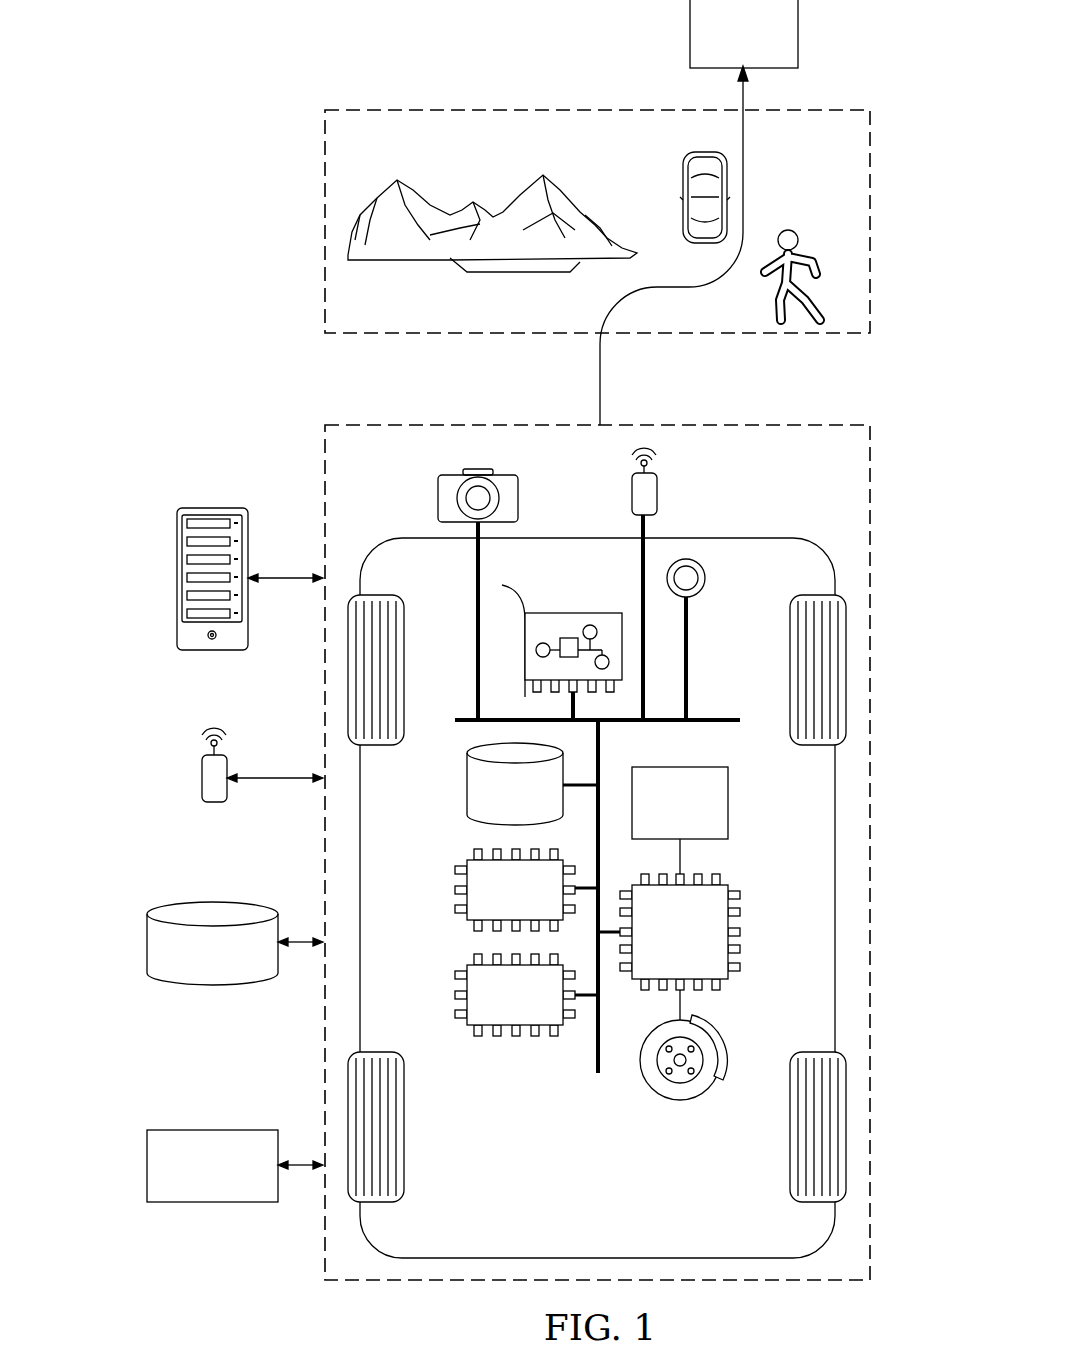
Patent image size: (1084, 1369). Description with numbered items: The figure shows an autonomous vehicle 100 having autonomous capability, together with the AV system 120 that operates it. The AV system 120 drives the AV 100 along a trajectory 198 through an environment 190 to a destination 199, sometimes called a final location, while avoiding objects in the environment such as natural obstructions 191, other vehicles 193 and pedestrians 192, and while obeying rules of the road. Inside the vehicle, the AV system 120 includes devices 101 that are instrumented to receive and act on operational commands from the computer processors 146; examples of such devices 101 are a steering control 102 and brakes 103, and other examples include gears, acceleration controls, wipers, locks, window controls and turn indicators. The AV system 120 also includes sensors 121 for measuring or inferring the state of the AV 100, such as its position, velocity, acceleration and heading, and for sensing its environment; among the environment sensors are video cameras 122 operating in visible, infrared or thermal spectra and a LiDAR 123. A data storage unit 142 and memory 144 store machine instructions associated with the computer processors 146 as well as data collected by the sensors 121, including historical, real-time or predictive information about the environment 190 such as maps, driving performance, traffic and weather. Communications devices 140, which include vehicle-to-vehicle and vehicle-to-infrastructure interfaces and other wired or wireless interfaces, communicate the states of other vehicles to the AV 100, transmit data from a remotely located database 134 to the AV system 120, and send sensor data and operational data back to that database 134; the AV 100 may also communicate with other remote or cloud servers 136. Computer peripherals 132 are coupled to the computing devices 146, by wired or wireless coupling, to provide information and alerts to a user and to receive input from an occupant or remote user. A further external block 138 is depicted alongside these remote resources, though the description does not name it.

The autonomous vehicle 100 is at (578, 1232).
The devices 101 is at (658, 946).
The steering control 102 is at (658, 818).
The brakes 103 is at (697, 1097).
The AV system 120 is at (697, 421).
The sensors 121 is at (707, 576).
The video cameras 122 is at (437, 497).
The LiDAR 123 is at (660, 490).
The computer peripherals 132 is at (202, 793).
The remotely located database 134 is at (212, 987).
The remote servers 136 is at (213, 508).
The remote system 138 is at (193, 1177).
The communications devices 140 is at (585, 613).
The data storage unit 142 is at (493, 804).
The memory 144 is at (493, 903).
The computer processors 146 is at (493, 1008).
The environment 190 is at (320, 220).
The natural obstructions 191 is at (477, 200).
The pedestrians 192 is at (790, 230).
The vehicles 193 is at (683, 185).
The trajectory 198 is at (751, 153).
The destination 199 is at (725, 46).